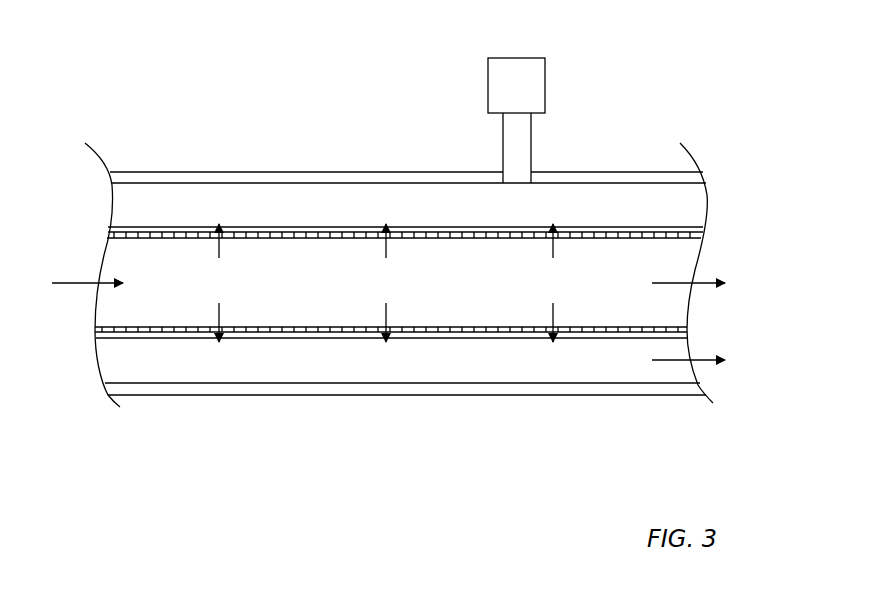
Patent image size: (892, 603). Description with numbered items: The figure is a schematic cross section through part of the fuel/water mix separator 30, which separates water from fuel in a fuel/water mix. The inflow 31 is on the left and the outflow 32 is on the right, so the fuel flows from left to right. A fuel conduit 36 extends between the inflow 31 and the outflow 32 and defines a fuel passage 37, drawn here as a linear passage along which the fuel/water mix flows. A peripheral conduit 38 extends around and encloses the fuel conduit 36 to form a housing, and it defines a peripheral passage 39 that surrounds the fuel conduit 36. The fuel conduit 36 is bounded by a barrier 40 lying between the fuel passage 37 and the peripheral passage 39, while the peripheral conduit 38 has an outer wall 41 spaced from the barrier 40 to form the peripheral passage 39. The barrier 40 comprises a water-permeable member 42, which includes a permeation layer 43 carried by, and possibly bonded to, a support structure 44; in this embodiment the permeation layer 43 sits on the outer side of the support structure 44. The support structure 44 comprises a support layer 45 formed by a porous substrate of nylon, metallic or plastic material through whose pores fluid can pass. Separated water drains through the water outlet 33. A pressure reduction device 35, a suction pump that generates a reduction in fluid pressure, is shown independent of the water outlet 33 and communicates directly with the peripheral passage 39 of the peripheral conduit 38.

The fuel/water mix separator 30 is at (385, 81).
The inflow 31 is at (73, 285).
The outflow 32 is at (703, 287).
The water outlet 33 is at (702, 362).
The pressure reduction device 35 is at (545, 98).
The fuel conduit 36 is at (277, 247).
The fuel passage 37 is at (315, 260).
The peripheral conduit 38 is at (533, 394).
The peripheral passage 39 is at (438, 358).
The barrier 40 is at (165, 227).
The outer wall 41 is at (227, 395).
The water-permeable member 42 is at (620, 227).
The permeation layer 43 is at (448, 227).
The support structure 44 is at (590, 238).
The support layer 45 is at (458, 238).